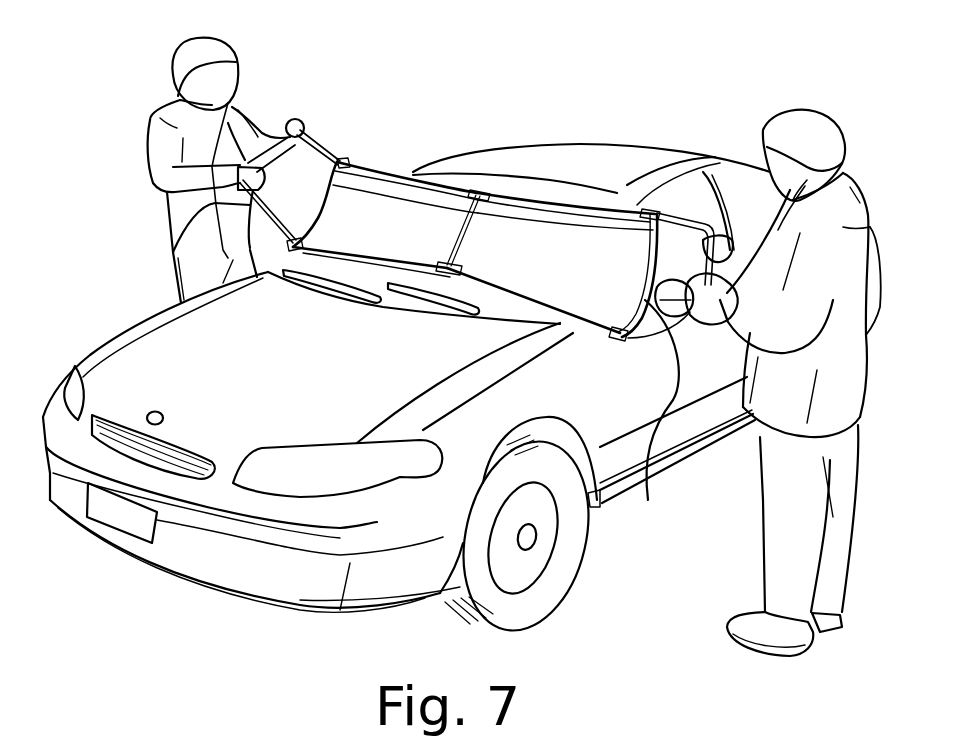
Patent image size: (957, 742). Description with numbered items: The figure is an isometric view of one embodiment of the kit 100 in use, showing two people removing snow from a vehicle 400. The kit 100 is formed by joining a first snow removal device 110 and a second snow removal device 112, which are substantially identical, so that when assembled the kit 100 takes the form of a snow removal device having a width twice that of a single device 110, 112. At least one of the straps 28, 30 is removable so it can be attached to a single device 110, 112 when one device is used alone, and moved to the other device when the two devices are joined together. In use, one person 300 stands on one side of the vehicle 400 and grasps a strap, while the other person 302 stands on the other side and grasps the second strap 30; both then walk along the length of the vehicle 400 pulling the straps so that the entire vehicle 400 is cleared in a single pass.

The kit 100 is at (500, 186).
The first snow removal device 110 is at (398, 213).
The second snow removal device 112 is at (537, 243).
The strap 28 is at (173, 241).
The second strap 30 is at (648, 500).
The person 300 is at (180, 107).
The person 302 is at (870, 227).
The vehicle 400 is at (406, 410).